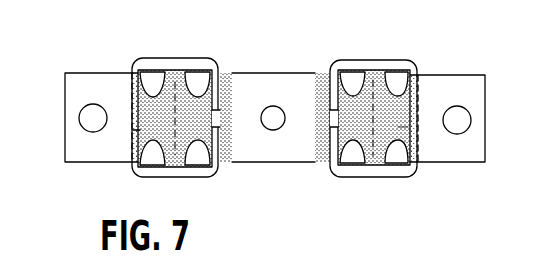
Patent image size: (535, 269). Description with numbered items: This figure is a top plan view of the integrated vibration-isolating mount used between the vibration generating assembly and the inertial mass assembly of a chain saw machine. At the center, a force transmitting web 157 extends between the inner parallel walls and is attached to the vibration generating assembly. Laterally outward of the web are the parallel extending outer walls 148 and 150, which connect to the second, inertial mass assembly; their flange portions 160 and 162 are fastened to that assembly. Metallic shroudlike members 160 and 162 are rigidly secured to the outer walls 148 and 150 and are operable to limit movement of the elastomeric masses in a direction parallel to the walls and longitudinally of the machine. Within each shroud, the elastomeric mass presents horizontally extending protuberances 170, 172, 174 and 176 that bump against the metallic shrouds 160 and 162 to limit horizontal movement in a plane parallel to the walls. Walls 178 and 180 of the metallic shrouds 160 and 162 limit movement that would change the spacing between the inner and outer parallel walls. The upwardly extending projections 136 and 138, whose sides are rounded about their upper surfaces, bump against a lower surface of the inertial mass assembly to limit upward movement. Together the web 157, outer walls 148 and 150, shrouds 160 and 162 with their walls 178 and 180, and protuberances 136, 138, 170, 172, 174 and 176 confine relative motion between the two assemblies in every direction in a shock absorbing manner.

The metallic shroudlike member 160 is at (70, 91).
The metallic shroudlike member 162 is at (334, 86).
The force transmitting web 157 is at (284, 157).
The outer wall 148 is at (131, 78).
The outer wall 150 is at (418, 90).
The projection 136 is at (136, 135).
The projection 138 is at (398, 127).
The horizontally extending protuberance 170 is at (170, 82).
The horizontally extending protuberance 172 is at (168, 160).
The horizontally extending protuberance 174 is at (373, 83).
The horizontally extending protuberance 176 is at (373, 157).
The wall of metallic shroud 178 is at (214, 148).
The wall of metallic shroud 180 is at (333, 145).